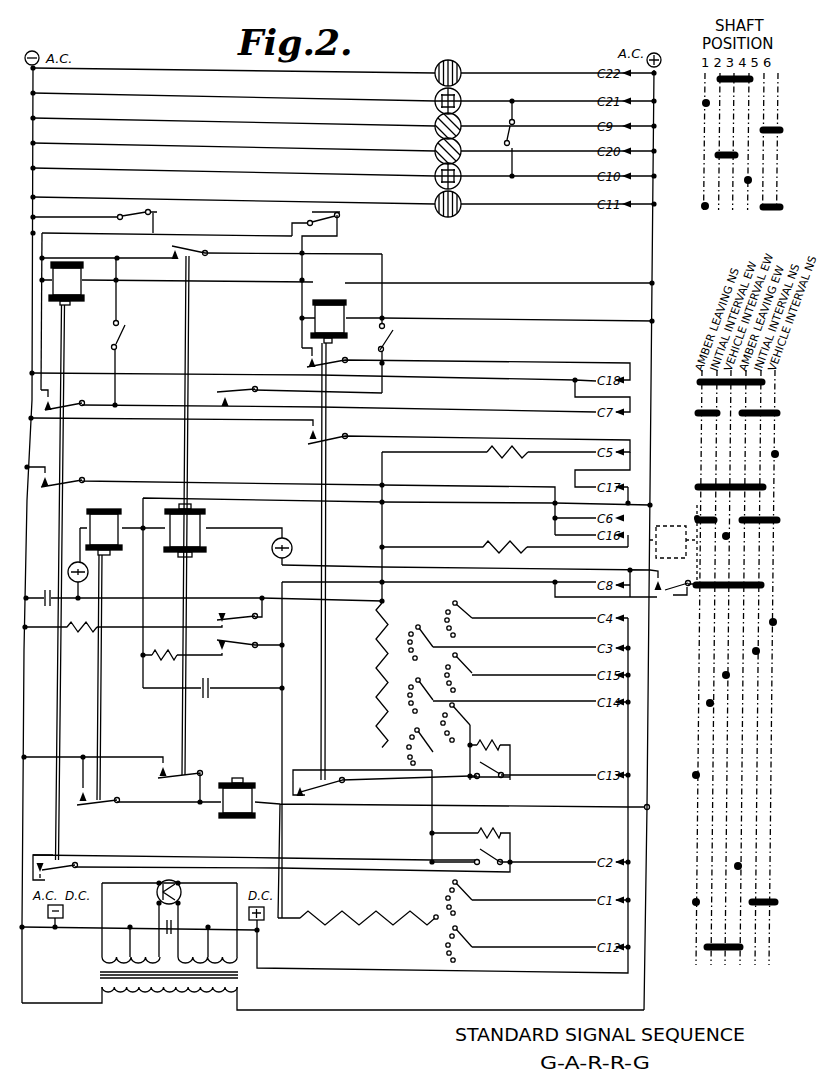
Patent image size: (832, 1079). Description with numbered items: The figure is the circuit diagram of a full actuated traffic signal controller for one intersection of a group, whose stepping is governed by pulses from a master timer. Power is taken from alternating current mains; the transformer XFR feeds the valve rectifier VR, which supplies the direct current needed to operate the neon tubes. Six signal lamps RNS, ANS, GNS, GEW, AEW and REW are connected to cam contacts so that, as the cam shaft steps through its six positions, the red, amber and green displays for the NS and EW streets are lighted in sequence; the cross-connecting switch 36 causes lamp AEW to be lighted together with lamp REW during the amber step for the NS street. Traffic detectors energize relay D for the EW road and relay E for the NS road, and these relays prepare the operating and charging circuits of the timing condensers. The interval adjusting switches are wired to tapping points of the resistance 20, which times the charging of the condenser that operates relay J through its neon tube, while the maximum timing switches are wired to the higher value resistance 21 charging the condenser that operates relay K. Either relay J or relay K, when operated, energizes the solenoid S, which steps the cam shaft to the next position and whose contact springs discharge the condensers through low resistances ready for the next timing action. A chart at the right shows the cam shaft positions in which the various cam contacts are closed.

The resistance 20 is at (376, 648).
The resistance 21 is at (346, 921).
The cross-connecting switch 36 is at (515, 138).
The relay D is at (66, 561).
The relay E is at (329, 540).
The relay J is at (104, 654).
The relay K is at (185, 515).
The solenoid S is at (237, 798).
The valve rectifier VR is at (181, 893).
The transformer XFR is at (333, 946).
The lamp RNS is at (435, 69).
The lamp ANS is at (435, 97).
The lamp GNS is at (435, 122).
The lamp GEW is at (435, 147).
The lamp AEW is at (435, 172).
The lamp REW is at (435, 200).